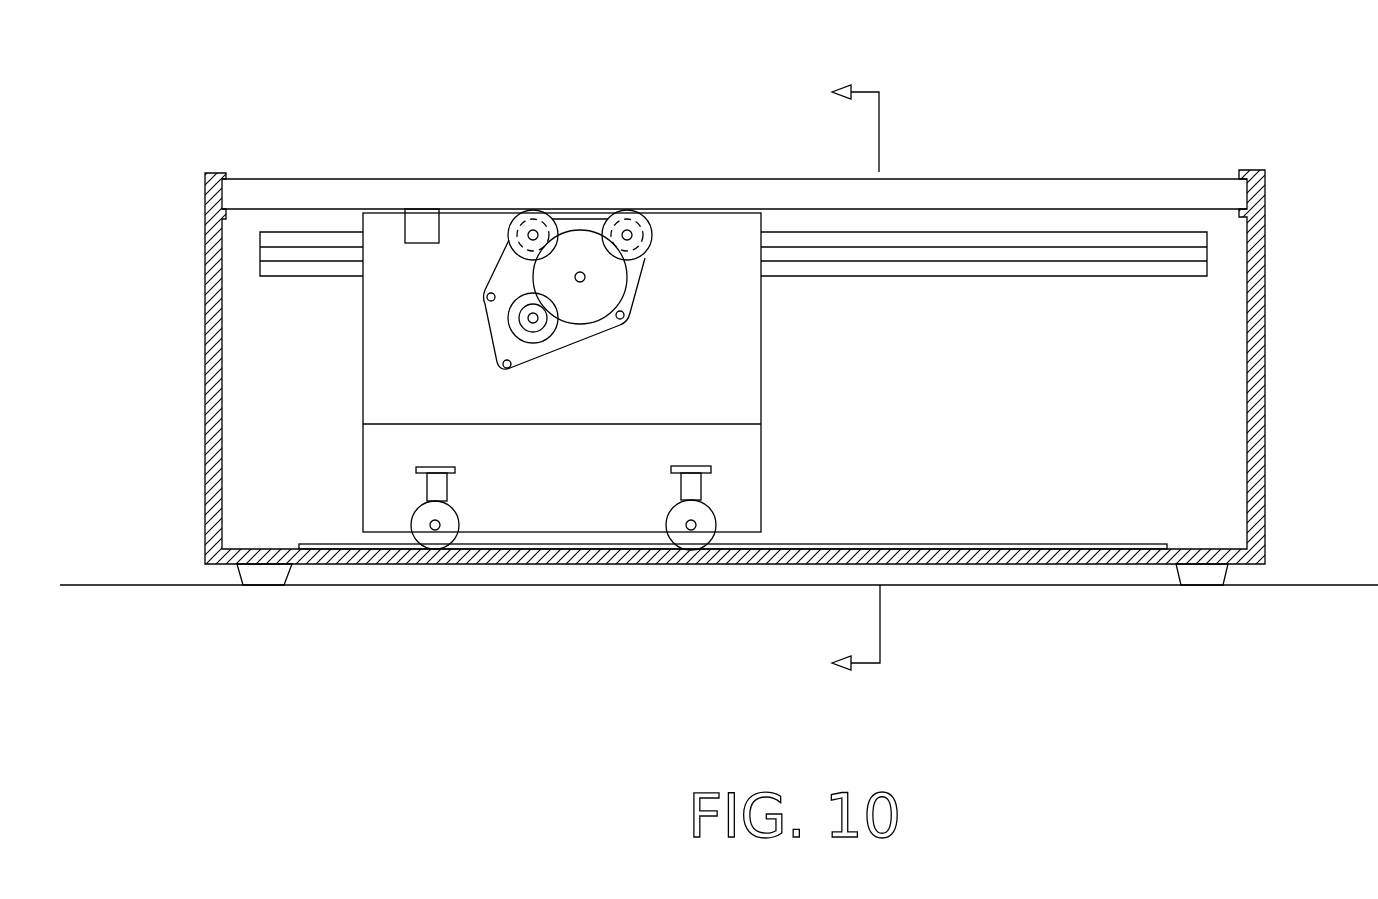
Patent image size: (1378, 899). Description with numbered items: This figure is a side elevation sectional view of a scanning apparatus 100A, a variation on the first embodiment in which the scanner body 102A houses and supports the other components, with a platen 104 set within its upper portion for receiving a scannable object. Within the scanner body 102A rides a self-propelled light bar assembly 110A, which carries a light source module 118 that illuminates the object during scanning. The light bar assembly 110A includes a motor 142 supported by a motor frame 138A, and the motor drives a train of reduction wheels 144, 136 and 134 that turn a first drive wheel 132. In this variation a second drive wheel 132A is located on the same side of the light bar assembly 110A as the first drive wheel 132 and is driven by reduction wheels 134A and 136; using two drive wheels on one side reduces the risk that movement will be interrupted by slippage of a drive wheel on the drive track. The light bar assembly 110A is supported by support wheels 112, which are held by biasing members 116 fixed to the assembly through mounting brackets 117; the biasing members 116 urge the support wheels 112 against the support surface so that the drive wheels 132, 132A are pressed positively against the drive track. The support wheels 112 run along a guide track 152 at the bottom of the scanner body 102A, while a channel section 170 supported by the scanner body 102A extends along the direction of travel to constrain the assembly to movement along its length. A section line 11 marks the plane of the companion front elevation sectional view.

The scanning apparatus 100A is at (689, 449).
The scanner body 102A is at (1266, 403).
The platen 104 is at (1132, 181).
The section line 11- 11 is at (881, 379).
The light bar assembly 110A is at (767, 388).
The support wheels 112 is at (460, 520).
The biasing members 116 is at (440, 490).
The mounting brackets 117 is at (437, 467).
The light source module 118 is at (418, 244).
The first drive wheel 132 is at (627, 212).
The second drive wheel 132A is at (537, 212).
The reduction wheel 134 is at (652, 228).
The reduction wheel 134A is at (512, 230).
The reduction wheel 136 is at (615, 285).
The motor frame 138A is at (572, 335).
The motor 142 is at (516, 330).
The reduction wheel 144 is at (501, 344).
The guide track 152 is at (1013, 543).
The channel section 170 is at (978, 266).